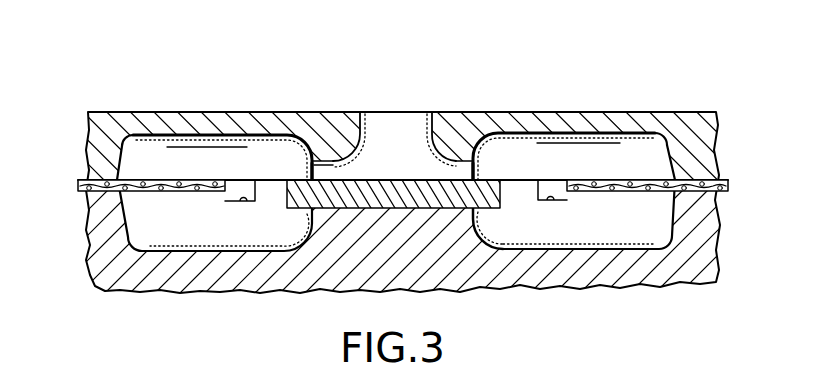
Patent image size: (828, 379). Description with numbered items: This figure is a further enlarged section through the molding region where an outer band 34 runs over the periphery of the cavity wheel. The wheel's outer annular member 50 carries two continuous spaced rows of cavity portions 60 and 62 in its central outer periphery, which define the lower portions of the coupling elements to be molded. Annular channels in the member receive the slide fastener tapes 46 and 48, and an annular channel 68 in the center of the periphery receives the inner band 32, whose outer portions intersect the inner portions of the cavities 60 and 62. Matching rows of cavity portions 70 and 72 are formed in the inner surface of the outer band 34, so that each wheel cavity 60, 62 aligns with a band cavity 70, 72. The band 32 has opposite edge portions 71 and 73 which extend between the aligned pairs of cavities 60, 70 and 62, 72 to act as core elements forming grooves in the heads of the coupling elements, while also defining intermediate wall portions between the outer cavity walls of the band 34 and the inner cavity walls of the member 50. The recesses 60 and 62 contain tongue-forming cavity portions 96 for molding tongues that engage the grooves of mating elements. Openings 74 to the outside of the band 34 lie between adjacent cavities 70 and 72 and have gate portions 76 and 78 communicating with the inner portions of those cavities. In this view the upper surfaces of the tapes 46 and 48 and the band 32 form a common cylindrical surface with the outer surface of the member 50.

The band 32 is at (384, 188).
The outer band 34 is at (96, 128).
The slide fastener tape 46 is at (157, 195).
The slide fastener tape 48 is at (610, 191).
The outer annular member 50 is at (100, 248).
The cavity portion 60 is at (191, 251).
The cavity portion 62 is at (592, 249).
The annular channel 68 is at (483, 213).
The cavity portion 70 is at (226, 136).
The edge portion 71 is at (300, 181).
The cavity portion 72 is at (529, 134).
The edge portion 73 is at (502, 180).
The opening 74 is at (393, 125).
The gate portion 76 is at (333, 168).
The gate portion 78 is at (457, 166).
The tongue-forming cavity portion 96 is at (245, 199).